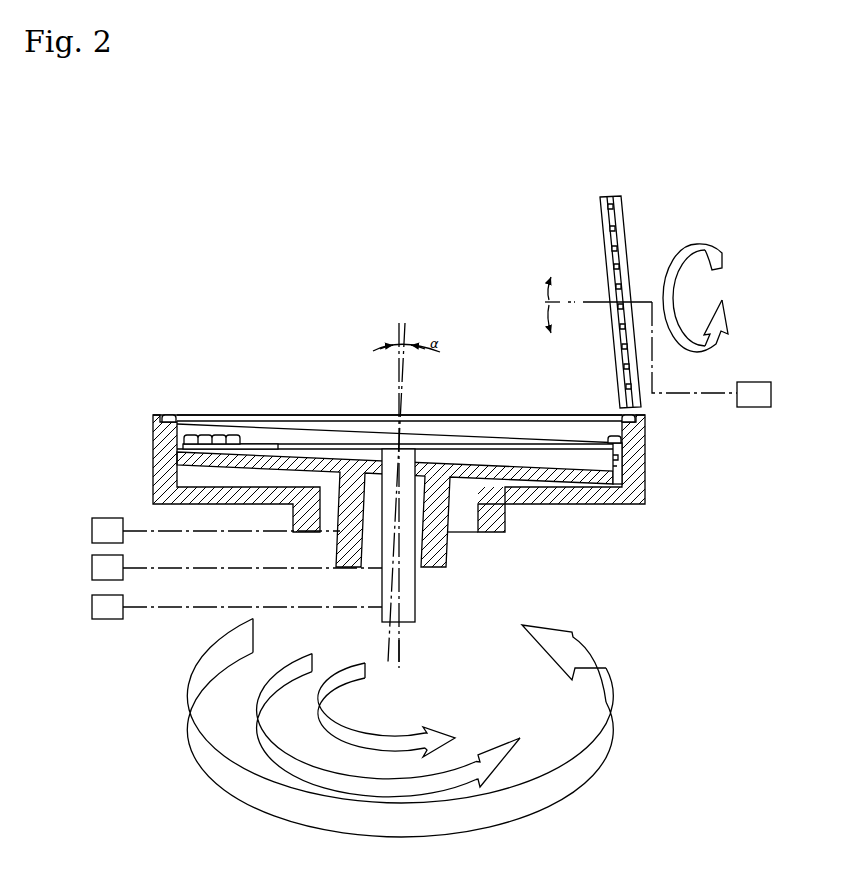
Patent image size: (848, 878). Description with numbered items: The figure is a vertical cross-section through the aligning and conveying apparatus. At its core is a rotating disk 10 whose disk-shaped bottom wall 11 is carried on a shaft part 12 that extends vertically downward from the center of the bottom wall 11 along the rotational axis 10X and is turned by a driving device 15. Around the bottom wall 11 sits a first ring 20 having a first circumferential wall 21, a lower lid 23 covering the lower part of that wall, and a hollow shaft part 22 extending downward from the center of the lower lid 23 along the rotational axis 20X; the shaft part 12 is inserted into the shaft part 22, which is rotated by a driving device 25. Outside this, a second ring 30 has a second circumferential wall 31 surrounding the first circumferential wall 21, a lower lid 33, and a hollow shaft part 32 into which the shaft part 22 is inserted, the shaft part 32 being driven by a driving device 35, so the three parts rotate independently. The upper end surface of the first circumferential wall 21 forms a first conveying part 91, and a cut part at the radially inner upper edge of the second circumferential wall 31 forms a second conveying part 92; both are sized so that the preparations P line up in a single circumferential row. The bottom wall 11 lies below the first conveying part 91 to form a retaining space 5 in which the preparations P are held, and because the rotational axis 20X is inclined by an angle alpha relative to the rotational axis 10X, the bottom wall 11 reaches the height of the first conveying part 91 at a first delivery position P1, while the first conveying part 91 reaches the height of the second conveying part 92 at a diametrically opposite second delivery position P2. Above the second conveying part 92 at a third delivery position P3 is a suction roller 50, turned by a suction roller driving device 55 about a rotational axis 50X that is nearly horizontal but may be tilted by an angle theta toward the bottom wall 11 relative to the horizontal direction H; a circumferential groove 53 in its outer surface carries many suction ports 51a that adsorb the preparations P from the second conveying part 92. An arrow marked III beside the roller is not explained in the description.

The retaining space 5 is at (276, 445).
The rotating disk 10 is at (399, 406).
The bottom wall 11 is at (446, 450).
The shaft part 12 is at (416, 614).
The driving device 15 is at (91, 607).
The first ring 20 is at (431, 520).
The first circumferential wall 21 is at (647, 462).
The shaft part 22 is at (433, 573).
The lower lid 23 is at (607, 487).
The driving device 25 is at (91, 568).
The second ring 30 is at (419, 487).
The second circumferential wall 31 is at (647, 446).
The shaft part 32 is at (493, 533).
The lower lid 33 is at (577, 505).
The driving device 35 is at (91, 531).
The suction roller 50 is at (605, 271).
The rotational axis 50X is at (589, 305).
The suction ports 51a is at (618, 264).
The groove 53 is at (613, 194).
The suction roller driving device 55 is at (771, 395).
The first conveying part 91 is at (500, 438).
The second conveying part 92 is at (468, 418).
The preparations P is at (170, 413).
The first delivery position P1 is at (611, 433).
The second delivery position P2 is at (179, 412).
The third delivery position P3 is at (648, 414).
The horizontal direction H is at (583, 300).
The rotational axis 20X is at (386, 650).
The rotational axis 10X is at (400, 655).
The viewing direction III is at (753, 302).